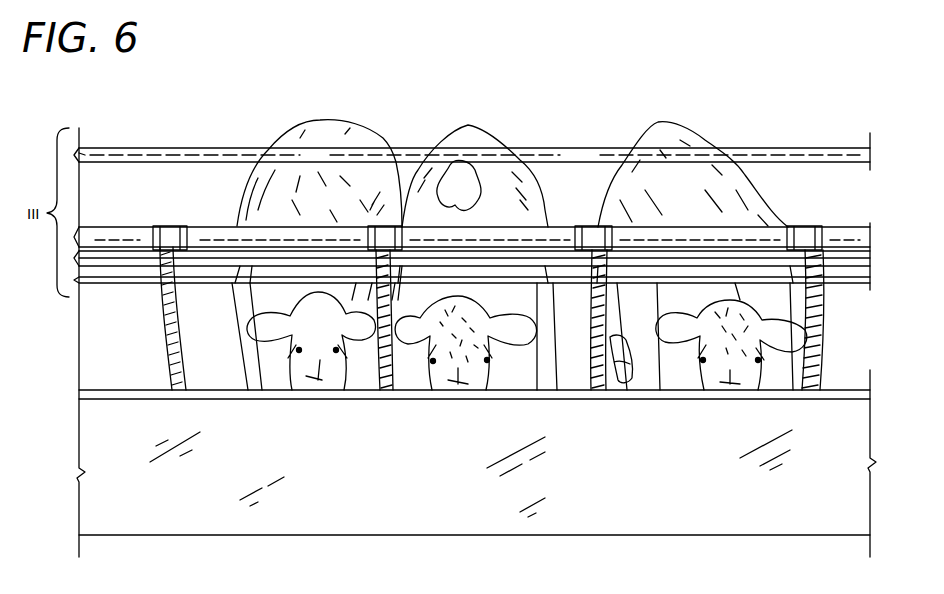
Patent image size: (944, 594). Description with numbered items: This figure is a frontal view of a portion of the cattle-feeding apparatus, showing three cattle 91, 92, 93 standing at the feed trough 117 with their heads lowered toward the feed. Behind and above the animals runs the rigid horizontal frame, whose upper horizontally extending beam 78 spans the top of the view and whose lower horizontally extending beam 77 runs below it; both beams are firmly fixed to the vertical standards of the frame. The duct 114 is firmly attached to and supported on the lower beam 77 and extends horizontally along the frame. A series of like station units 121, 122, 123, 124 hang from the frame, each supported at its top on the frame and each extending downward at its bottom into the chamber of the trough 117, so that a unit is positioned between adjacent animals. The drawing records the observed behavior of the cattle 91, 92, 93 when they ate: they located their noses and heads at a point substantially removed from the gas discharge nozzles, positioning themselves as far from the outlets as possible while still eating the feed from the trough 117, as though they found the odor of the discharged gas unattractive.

The horizontally extending rigid beam 78 is at (113, 150).
The horizontally extending rigid beam 77 is at (123, 262).
The duct 114 is at (220, 241).
The cattle 91 is at (347, 126).
The cattle 92 is at (466, 138).
The cattle 93 is at (668, 130).
The station assembly unit 121 is at (823, 235).
The station assembly unit 122 is at (583, 237).
The station assembly unit 123 is at (389, 392).
The station assembly unit 124 is at (187, 372).
The trough 117 is at (660, 475).